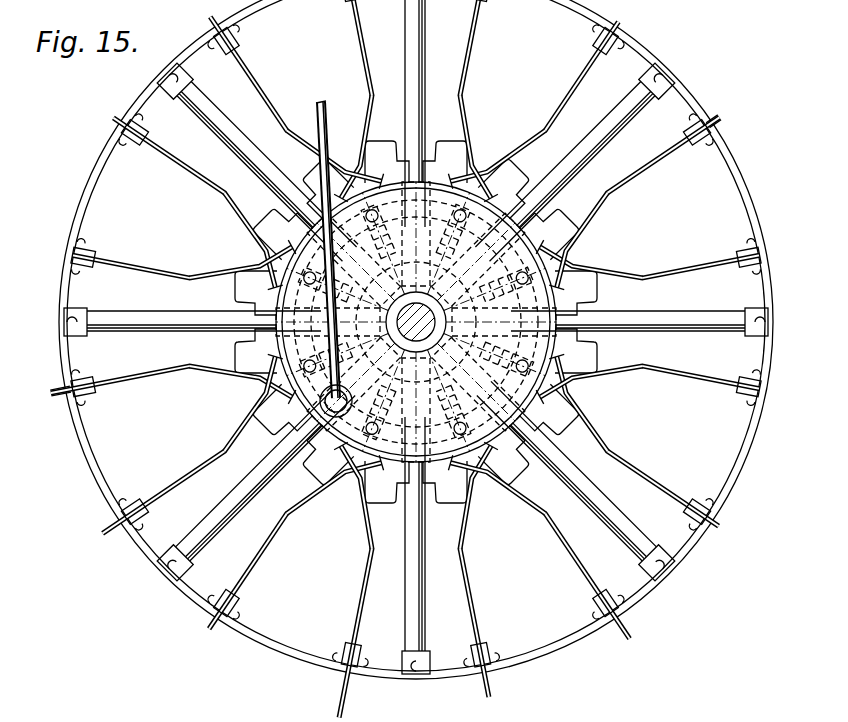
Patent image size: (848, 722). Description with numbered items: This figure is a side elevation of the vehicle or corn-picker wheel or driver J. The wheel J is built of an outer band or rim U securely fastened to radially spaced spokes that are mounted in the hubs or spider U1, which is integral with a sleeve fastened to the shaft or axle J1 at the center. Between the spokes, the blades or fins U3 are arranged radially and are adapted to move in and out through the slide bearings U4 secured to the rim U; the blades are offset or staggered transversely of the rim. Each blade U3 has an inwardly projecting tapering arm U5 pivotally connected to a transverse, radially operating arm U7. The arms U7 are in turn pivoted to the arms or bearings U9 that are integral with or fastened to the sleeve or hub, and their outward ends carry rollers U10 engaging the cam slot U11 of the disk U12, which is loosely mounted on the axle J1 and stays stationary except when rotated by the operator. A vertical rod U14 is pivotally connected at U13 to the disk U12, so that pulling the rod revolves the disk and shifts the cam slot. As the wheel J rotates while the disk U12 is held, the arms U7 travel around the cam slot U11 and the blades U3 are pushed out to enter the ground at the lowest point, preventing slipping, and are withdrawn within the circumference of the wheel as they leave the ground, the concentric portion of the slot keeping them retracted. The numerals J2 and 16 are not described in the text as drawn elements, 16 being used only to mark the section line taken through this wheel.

The wheel or driver J is at (733, 500).
The shaft or axle J1 is at (432, 323).
The hub ring plate J2 is at (448, 155).
The outer band or rim U is at (414, 72).
The hubs or spider U1 is at (484, 192).
The blades or fins U3 is at (97, 257).
The slide bearings U4 is at (497, 2).
The inwardly projecting tapering arms U5 is at (223, 195).
The transverse and radially operating arms U7 is at (450, 327).
The arms or bearings U9 is at (420, 360).
The rollers U10 is at (610, 352).
The cam slot U11 is at (240, 347).
The disk U12 is at (320, 410).
The pivotal connection U13 is at (313, 450).
The vertical rod U14 is at (352, 101).
The protruding rod end 16 is at (726, 113).